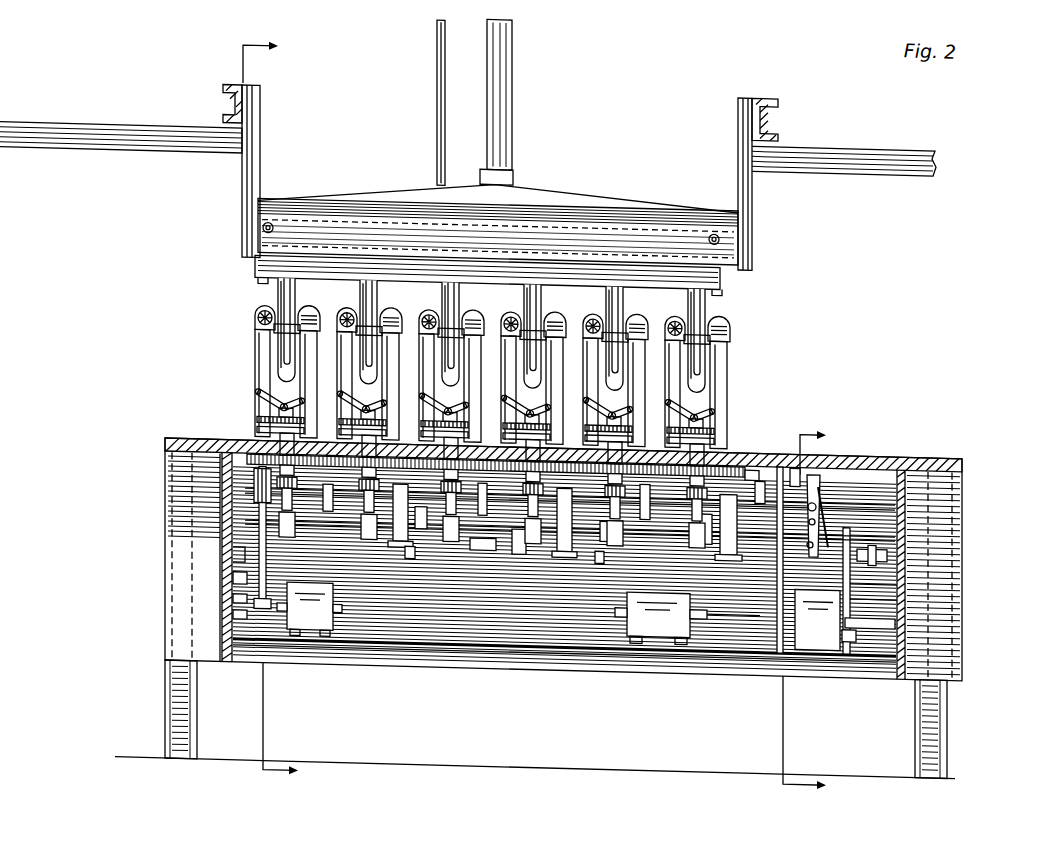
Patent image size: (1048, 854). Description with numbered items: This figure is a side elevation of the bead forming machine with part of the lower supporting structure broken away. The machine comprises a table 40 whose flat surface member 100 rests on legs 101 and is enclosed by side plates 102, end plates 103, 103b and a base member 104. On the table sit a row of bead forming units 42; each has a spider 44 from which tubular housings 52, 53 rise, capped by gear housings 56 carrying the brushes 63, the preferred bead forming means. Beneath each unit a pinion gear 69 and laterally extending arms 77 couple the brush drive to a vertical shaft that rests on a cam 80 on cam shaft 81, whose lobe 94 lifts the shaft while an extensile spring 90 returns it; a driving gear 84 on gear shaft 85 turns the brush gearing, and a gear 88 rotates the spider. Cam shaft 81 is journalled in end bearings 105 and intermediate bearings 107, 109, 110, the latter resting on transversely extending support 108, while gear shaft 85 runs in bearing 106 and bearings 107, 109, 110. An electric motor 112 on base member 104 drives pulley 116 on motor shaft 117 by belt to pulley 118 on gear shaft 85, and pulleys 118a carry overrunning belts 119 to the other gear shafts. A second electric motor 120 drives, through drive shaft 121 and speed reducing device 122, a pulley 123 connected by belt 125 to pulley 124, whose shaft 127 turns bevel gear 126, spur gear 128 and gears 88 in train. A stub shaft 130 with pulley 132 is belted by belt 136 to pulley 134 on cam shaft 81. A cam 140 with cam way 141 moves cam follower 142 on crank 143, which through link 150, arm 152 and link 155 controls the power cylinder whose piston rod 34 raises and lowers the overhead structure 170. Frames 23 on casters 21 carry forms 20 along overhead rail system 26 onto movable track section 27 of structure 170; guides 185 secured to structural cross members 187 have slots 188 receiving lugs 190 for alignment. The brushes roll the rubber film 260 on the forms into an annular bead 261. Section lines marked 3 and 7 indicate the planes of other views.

The forms 20 is at (297, 281).
The casters 21 is at (282, 212).
The frame 23 is at (262, 262).
The overhead rail system 26 is at (150, 122).
The movable track section 27 is at (662, 219).
The piston rod 34 is at (512, 59).
The table 40 is at (937, 433).
The bead forming units 42 is at (244, 343).
The spider 44 is at (270, 434).
The tubular housing 52 is at (500, 315).
The tubular housing 53 is at (556, 335).
The gear housings 56 is at (256, 316).
The brush 63 is at (262, 304).
The pinion gear 69 is at (270, 407).
The laterally extending arms 77 is at (262, 392).
The cam 80 is at (505, 591).
The cam shaft 81 is at (268, 556).
The driving gear 84 is at (612, 532).
The gear shaft 85 is at (300, 556).
The gear 88 is at (278, 440).
The extensile spring 90 is at (412, 555).
The lobe 94 is at (644, 510).
The flat surface member 100 is at (870, 447).
The legs 101 is at (180, 704).
The side plates 102 is at (215, 534).
The end plate 103 is at (245, 558).
The end plate 103b is at (228, 468).
The base member 104 is at (500, 646).
The bearings 105 is at (232, 543).
The bearing 106 is at (235, 488).
The bearing 107 is at (710, 532).
The transversely extending support 108 is at (396, 542).
The bearing 109 is at (519, 546).
The bearing 110 is at (420, 553).
The electric motor 112 is at (310, 628).
The pulley 116 is at (238, 596).
The motor shaft 117 is at (232, 613).
The pulley 118 is at (237, 510).
The pulleys 118a is at (340, 565).
The block 119 is at (240, 576).
The second electric motor 120 is at (650, 626).
The drive shaft 121 is at (705, 646).
The speed reducing device 122 is at (815, 633).
The pulley 123 is at (780, 624).
The pulley 124 is at (802, 458).
The belt 125 is at (765, 602).
The bevel gear 126 is at (762, 466).
The shaft 127 is at (805, 452).
The spur gear 128 is at (752, 455).
The stub shaft 130 is at (900, 606).
The pulley 132 is at (850, 624).
The pulley 134 is at (880, 503).
The belt 136 is at (890, 581).
The cam 140 is at (900, 436).
The cam way 141 is at (905, 461).
The cam follower 142 is at (890, 566).
The crank 143 is at (822, 470).
The link 150 is at (478, 543).
The arm 152 is at (476, 510).
The link 155 is at (437, 98).
The overhead structure 170 is at (577, 189).
The guide 185 is at (240, 181).
The structural cross members 187 is at (233, 86).
The slot 188 is at (253, 135).
The lug 190 is at (252, 224).
The rubber film 260 is at (262, 358).
The annular bead 261 is at (705, 321).
The section line 3- 3 is at (280, 410).
The section line 7- 7 is at (813, 605).